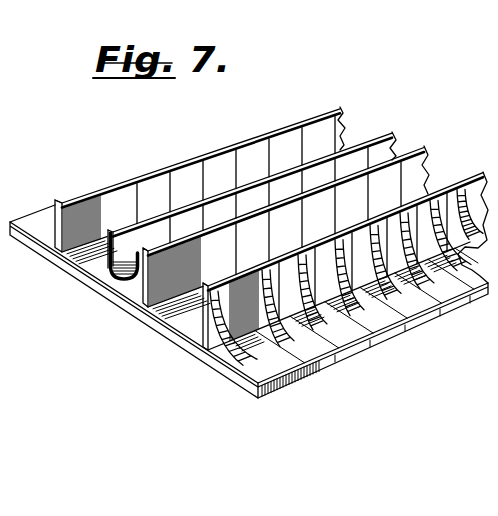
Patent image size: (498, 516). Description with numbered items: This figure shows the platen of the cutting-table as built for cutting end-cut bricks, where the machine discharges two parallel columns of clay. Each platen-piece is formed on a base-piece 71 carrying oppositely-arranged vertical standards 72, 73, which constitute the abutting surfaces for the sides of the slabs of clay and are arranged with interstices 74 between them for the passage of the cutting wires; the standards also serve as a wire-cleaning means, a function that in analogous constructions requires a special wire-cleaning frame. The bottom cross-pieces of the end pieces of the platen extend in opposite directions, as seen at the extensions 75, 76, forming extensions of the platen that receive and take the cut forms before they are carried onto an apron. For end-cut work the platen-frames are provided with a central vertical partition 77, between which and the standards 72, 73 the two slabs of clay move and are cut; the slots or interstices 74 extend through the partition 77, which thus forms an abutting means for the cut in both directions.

The base-piece 71 is at (127, 312).
The vertical standard 72 is at (66, 199).
The vertical standard 73 is at (205, 333).
The interstices 74 is at (165, 166).
The extension of the platen 75 is at (322, 387).
The extension of the platen 76 is at (32, 221).
The central vertical partition 77 is at (397, 146).